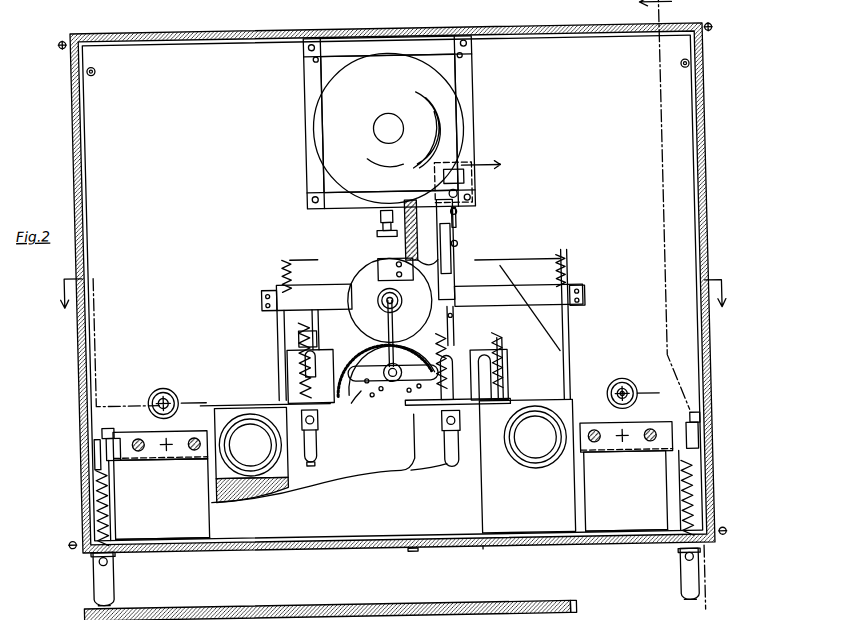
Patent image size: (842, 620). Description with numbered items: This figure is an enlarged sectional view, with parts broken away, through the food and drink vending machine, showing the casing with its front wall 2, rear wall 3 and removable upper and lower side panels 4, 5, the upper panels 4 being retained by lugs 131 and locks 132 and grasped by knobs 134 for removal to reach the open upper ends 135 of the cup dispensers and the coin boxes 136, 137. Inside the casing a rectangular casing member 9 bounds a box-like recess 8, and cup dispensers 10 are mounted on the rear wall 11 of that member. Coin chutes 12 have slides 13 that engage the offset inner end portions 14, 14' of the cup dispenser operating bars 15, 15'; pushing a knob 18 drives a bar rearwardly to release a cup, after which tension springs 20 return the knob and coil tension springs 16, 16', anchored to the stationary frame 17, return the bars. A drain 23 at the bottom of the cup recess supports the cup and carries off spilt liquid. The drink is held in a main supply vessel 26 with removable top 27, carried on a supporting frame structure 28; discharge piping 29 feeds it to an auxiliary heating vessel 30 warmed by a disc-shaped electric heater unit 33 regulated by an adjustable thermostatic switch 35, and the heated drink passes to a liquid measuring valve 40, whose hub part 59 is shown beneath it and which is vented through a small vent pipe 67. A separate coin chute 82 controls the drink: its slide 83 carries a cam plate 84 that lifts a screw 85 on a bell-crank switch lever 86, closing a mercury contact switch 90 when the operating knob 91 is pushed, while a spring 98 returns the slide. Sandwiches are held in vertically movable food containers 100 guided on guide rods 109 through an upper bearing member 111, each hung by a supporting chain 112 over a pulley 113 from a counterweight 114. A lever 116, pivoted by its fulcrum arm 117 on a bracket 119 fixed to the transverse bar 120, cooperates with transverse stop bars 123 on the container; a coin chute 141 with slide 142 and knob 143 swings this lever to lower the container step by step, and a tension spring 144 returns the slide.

The front wall 2 is at (486, 556).
The rear wall 3 is at (227, 36).
The upper side panel 4 is at (52, 178).
The lower side panel 5 is at (471, 235).
The box-like recess 8 is at (406, 488).
The casing member 9 is at (386, 488).
The cup dispenser 10 is at (290, 500).
The rear wall of casing member 11 is at (252, 404).
The coin chute 12 is at (308, 426).
The slide 13 is at (304, 448).
The offset inner end portion 14 is at (313, 270).
The offset inner end portion 14' is at (518, 268).
The cup dispenser operating bar 15 is at (282, 355).
The cup dispenser operating bar 15' is at (582, 324).
The coil tension spring 16 is at (269, 285).
The coil tension spring 16' is at (582, 280).
The stationary frame 17 is at (531, 291).
The knob 18 is at (304, 469).
The tension spring 20 is at (290, 358).
The drain 23 is at (352, 400).
The main supply vessel 26 is at (304, 141).
The removable top 27 is at (450, 120).
The supporting frame structure 28 is at (474, 94).
The discharge piping 29 is at (374, 228).
The auxiliary heating vessel 30 is at (350, 262).
The electric heater unit 33 is at (346, 276).
The adjustable thermostatic switch 35 is at (374, 264).
The liquid measuring valve 40 is at (377, 410).
The pivot hub 59 is at (388, 410).
The vent pipe 67 is at (383, 320).
The coin chute 82 is at (432, 442).
The slide 83 is at (448, 240).
The cam plate 84 is at (452, 254).
The screw 85 is at (450, 241).
The switch lever 86 is at (452, 218).
The mercury contact switch 90 is at (452, 216).
The operating knob 91 is at (435, 456).
The spring 98 is at (450, 342).
The food container 100 is at (204, 550).
The guide rod 109 is at (138, 404).
The upper bearing member 111 is at (140, 460).
The supporting chain 112 is at (170, 405).
The pulley 113 is at (158, 614).
The counterweight 114 is at (614, 396).
The lever 116 is at (88, 428).
The fulcrum arm 117 is at (82, 450).
The bracket 119 is at (92, 442).
The transverse bar 120 is at (70, 352).
The transverse stop bar 123 is at (92, 470).
The lug 131 is at (96, 72).
The lock 132 is at (404, 556).
The knob 134 is at (58, 45).
The open upper end of cup dispenser 135 is at (216, 396).
The coin box 136 is at (288, 346).
The coin box 137 is at (498, 358).
The coin chute 141 is at (78, 558).
The slide 142 is at (102, 574).
The knob 143 is at (80, 606).
The tension spring 144 is at (684, 505).